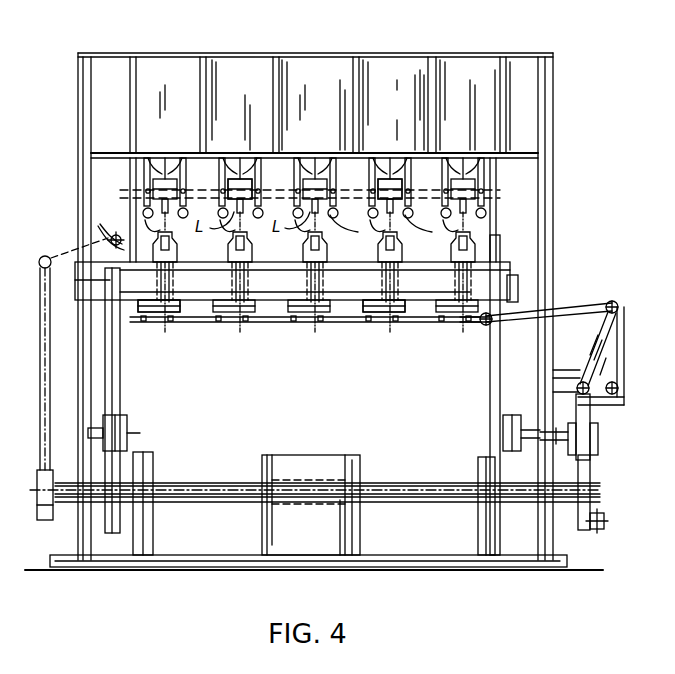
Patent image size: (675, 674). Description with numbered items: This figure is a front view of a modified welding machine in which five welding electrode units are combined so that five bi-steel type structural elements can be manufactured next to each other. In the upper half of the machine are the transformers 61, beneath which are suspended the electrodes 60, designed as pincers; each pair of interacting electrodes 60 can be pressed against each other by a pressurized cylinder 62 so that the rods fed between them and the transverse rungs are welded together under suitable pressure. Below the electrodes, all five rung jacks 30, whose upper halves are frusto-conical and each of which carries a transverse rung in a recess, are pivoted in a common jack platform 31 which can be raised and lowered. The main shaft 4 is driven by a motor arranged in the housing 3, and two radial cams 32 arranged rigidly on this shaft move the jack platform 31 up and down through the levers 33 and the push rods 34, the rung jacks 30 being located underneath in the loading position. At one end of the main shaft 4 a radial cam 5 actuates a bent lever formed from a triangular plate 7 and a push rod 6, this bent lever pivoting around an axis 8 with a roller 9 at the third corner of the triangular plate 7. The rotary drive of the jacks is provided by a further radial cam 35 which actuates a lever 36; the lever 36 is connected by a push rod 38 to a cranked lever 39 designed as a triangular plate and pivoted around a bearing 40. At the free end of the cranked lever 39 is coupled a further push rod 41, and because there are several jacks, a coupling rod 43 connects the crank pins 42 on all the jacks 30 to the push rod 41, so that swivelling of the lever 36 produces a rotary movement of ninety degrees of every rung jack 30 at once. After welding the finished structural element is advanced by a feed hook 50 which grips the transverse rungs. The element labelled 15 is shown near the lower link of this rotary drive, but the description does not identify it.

The housing 3 is at (312, 460).
The main shaft 4 is at (416, 502).
The radial cam 5 is at (45, 518).
The push rod 6 is at (44, 372).
The triangular plate 7 is at (68, 250).
The axis 8 is at (100, 228).
The roller 9 is at (116, 234).
The nut 15 is at (600, 528).
The rung jack 30 is at (180, 252).
The rung jack platform 31 is at (216, 294).
The radial cams 32 is at (130, 540).
The levers 33 is at (118, 415).
The push rods 34 is at (120, 358).
The radial cam 35 is at (592, 476).
The lever 36 is at (600, 440).
The push rod 38 is at (588, 418).
The cranked lever 39 is at (608, 349).
The bearing 40 is at (620, 388).
The push rod 41 is at (575, 310).
The crank pin 42 is at (222, 322).
The coupling rod 43 is at (272, 324).
The feed hook 50 is at (386, 229).
The electrodes 60 is at (182, 160).
The transformers 61 is at (250, 110).
The pressurized cylinder 62 is at (242, 184).